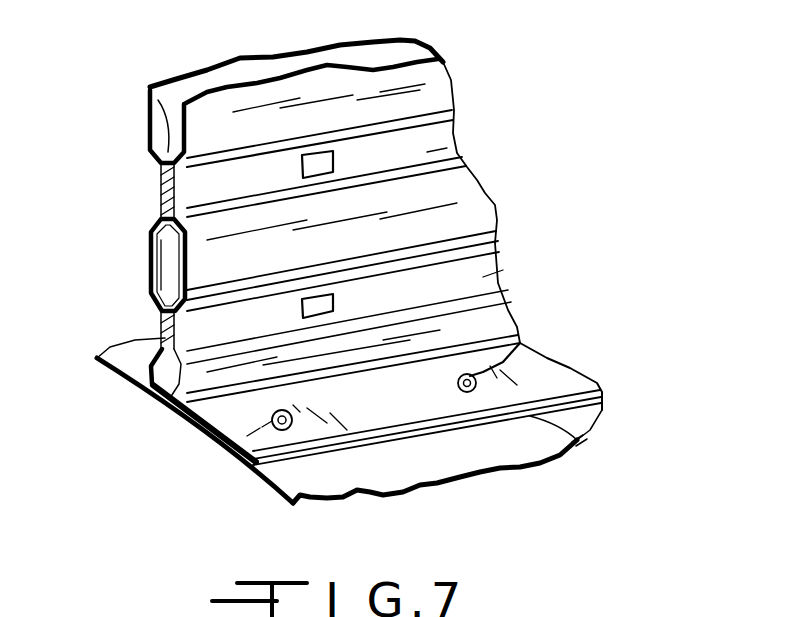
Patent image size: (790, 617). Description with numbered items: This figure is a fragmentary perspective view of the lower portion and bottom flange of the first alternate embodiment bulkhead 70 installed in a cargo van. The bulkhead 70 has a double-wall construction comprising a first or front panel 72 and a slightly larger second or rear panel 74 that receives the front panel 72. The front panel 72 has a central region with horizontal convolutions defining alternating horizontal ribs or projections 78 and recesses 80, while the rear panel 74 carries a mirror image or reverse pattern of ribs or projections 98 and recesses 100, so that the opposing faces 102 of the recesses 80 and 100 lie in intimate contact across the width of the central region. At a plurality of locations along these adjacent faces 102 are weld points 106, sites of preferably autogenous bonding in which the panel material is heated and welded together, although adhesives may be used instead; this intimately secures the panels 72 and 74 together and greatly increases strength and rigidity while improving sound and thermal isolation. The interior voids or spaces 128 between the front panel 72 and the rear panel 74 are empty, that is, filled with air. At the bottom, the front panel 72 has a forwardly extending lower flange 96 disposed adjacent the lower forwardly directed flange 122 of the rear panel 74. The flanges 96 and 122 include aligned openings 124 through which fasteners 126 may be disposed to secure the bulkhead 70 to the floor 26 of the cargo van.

The first alternate embodiment bulkhead 70 is at (405, 28).
The first or front panel 72 is at (427, 66).
The second or rear panel 74 is at (160, 82).
The ribs or projections 78 is at (447, 100).
The recesses 80 is at (457, 158).
The lower flange 96 is at (548, 377).
The ribs or projections 98 is at (151, 132).
The recesses 100 is at (162, 184).
The opposing faces 102 is at (150, 93).
The weld points 106 is at (335, 161).
The lower forwardly directed flange 122 is at (580, 441).
The aligned openings 124 is at (245, 440).
The fasteners 126 is at (478, 378).
The interior voids or spaces 128 is at (172, 266).
The floor 26 is at (403, 460).